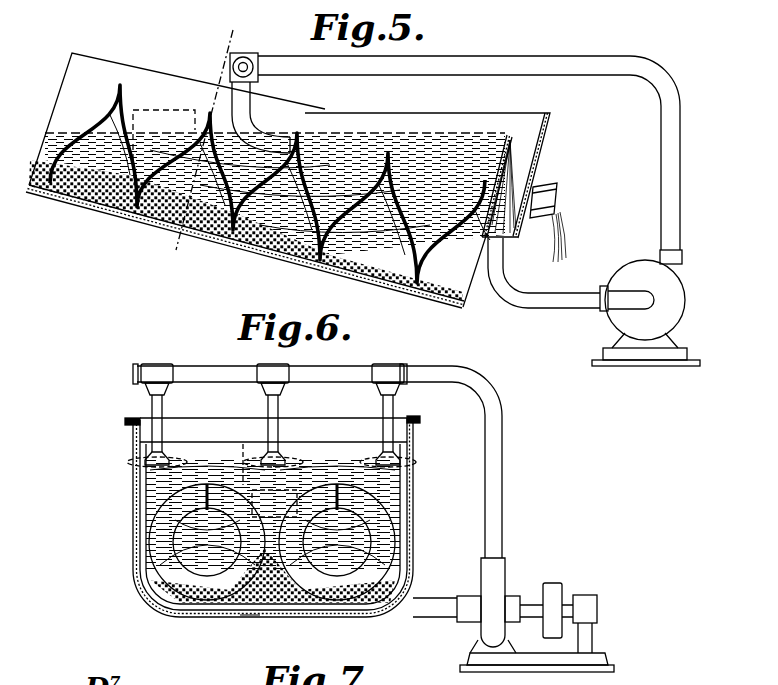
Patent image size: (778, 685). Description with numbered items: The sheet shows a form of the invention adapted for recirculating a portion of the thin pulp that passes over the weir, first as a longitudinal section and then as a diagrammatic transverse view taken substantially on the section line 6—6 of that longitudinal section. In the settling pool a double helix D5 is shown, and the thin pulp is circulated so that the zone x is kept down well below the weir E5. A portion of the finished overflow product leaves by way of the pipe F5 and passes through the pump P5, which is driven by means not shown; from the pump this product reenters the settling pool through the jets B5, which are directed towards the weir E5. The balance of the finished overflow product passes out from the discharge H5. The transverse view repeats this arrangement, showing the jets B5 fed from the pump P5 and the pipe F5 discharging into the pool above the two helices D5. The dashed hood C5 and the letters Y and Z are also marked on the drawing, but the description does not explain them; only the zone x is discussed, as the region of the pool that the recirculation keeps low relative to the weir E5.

In FIG. 5, the double helix D5 is at (120, 83).
In FIG. 6, the double helix D5 is at (160, 513).
In FIG. 5, the hood casing C5 is at (168, 108).
In FIG. 5, the section line 6 is at (243, 39).
In FIG. 5, the jets B5 is at (258, 122).
In FIG. 6, the jets B5 is at (150, 452).
In FIG. 5, the weir E5 is at (522, 132).
In FIG. 6, the weir E5 is at (207, 440).
In FIG. 5, the overflow product discharge H5 is at (556, 202).
In FIG. 6, the overflow product discharge H5 is at (260, 468).
In FIG. 5, the pipe F5 is at (507, 248).
In FIG. 6, the pipe F5 is at (249, 615).
In FIG. 5, the pump P5 is at (660, 298).
In FIG. 6, the pump P5 is at (495, 590).
In FIG. 5, the liquid Y is at (275, 194).
In FIG. 6, the liquid Y is at (273, 514).
In FIG. 5, the zone x is at (246, 230).
In FIG. 6, the zone x is at (272, 573).
In FIG. 5, the lighter material Z is at (233, 233).